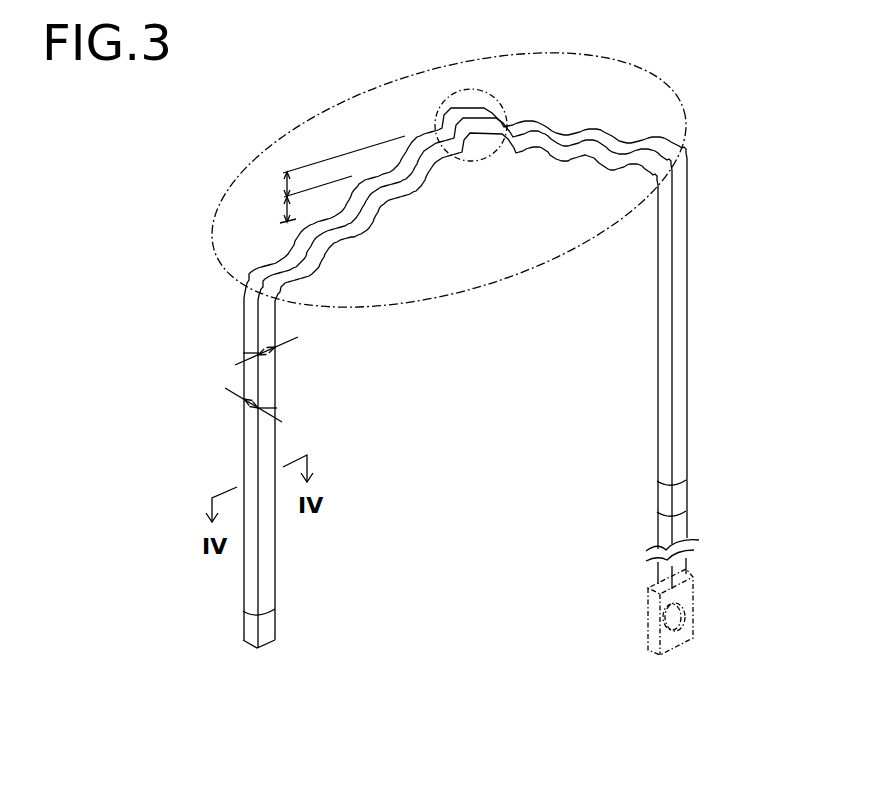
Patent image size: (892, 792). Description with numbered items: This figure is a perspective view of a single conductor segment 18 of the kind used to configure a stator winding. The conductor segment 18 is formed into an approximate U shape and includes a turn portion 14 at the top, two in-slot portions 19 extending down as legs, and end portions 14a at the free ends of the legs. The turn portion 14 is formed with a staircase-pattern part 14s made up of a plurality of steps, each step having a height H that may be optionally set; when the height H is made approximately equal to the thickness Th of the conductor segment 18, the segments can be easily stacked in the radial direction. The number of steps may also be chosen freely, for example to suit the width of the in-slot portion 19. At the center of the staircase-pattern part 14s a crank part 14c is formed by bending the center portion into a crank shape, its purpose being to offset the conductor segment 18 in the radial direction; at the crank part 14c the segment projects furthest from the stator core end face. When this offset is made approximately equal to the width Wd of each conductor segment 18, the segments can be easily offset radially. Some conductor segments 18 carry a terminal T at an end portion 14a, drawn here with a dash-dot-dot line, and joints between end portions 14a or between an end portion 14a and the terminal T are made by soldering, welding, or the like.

The turn portion 14 is at (500, 366).
The end portion 14a is at (711, 476).
The crank part 14c is at (480, 159).
The staircase-pattern part 14s is at (395, 307).
The conductor segment 18 is at (300, 113).
The in-slot portion 19 is at (711, 188).
The terminal T is at (650, 617).
The height H is at (332, 182).
The thickness Th is at (270, 352).
The width Wd is at (251, 412).